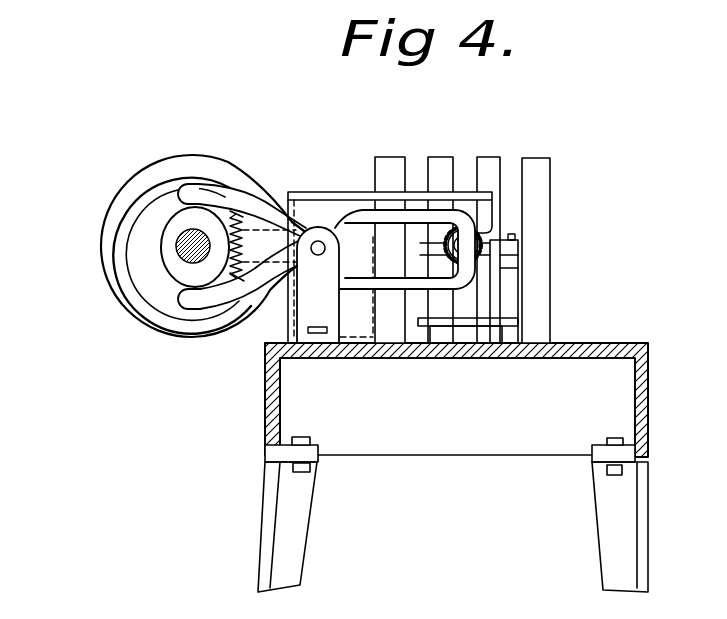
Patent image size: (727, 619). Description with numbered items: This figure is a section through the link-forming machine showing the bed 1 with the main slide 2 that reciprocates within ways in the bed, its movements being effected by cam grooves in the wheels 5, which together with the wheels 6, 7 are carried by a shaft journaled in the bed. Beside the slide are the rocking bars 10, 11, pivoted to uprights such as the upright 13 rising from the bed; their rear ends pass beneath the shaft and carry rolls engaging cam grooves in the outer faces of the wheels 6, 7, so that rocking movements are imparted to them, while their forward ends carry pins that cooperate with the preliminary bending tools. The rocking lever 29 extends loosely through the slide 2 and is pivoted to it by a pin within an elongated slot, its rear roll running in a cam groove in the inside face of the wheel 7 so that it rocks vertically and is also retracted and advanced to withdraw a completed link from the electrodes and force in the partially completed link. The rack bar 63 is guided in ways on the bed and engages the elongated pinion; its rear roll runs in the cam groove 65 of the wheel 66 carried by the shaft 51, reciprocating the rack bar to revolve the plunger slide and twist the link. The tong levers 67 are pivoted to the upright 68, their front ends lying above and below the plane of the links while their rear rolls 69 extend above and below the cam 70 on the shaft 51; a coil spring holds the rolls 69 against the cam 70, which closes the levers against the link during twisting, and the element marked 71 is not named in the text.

The bed 1 is at (266, 358).
The main slide 2 is at (480, 337).
The wheels 5 is at (375, 170).
The wheel 6 is at (441, 157).
The wheel 7 is at (497, 157).
The rocking bar 10 is at (417, 308).
The rocking bar 11 is at (492, 267).
The upright 13 is at (512, 277).
The rocking lever 29 is at (465, 310).
The shaft 51 is at (176, 245).
The rack bar 63 is at (248, 262).
The cam groove 65 is at (125, 275).
The wheel 66 is at (133, 181).
The tong levers 67 is at (224, 293).
The upright 68 is at (318, 284).
The rolls 69 is at (185, 190).
The cam 70 is at (170, 273).
The spring 71 is at (246, 283).